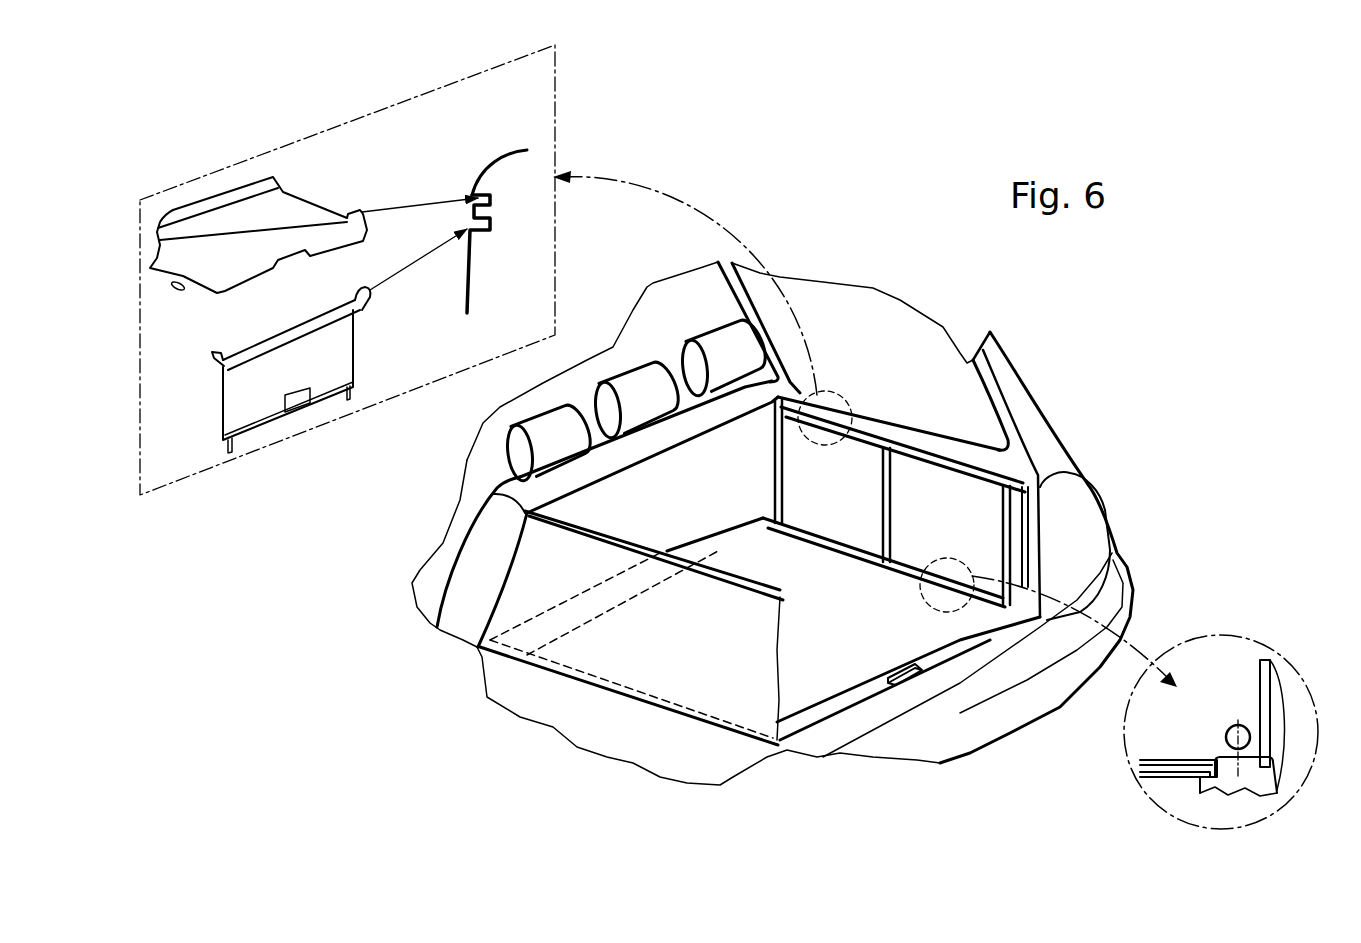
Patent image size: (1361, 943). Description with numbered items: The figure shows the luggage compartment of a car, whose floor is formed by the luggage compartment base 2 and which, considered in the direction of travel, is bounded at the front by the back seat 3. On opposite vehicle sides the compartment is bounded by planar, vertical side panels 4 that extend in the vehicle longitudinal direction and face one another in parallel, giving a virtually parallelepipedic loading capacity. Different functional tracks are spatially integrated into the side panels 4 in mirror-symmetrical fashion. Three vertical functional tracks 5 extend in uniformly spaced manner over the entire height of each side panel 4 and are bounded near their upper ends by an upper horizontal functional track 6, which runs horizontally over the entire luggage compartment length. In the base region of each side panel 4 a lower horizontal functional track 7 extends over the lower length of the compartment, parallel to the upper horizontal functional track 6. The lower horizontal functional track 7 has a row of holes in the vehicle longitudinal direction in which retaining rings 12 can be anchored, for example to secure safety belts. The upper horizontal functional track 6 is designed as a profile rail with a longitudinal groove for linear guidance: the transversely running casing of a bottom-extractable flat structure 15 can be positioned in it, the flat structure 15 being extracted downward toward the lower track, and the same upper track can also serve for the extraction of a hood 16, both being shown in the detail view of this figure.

The luggage compartment base 2 is at (874, 641).
The back seat 3 is at (672, 511).
The side panels 4 is at (844, 492).
The vertical functional tracks 5 is at (873, 447).
The upper horizontal functional track 6 is at (470, 176).
The lower horizontal functional track 7 is at (842, 555).
The retaining rings 12 is at (1238, 722).
The bottom-extractable flat structure 15 is at (337, 352).
The hood 16 is at (297, 213).